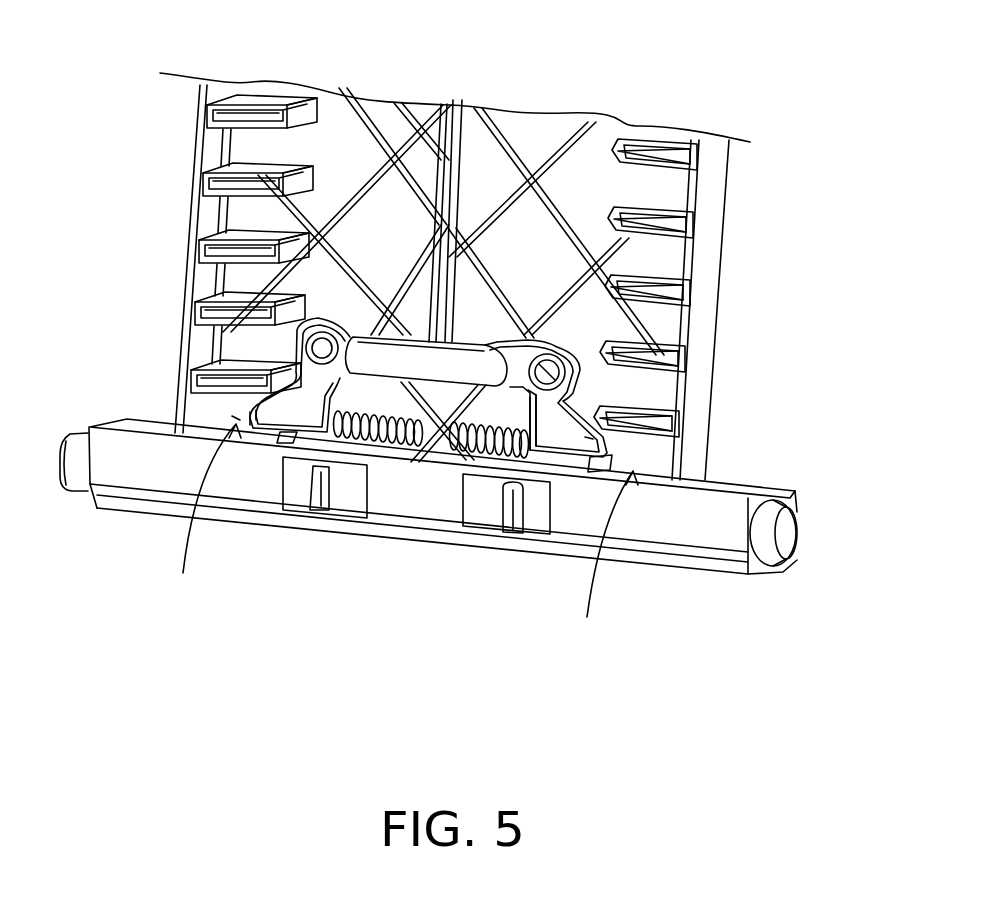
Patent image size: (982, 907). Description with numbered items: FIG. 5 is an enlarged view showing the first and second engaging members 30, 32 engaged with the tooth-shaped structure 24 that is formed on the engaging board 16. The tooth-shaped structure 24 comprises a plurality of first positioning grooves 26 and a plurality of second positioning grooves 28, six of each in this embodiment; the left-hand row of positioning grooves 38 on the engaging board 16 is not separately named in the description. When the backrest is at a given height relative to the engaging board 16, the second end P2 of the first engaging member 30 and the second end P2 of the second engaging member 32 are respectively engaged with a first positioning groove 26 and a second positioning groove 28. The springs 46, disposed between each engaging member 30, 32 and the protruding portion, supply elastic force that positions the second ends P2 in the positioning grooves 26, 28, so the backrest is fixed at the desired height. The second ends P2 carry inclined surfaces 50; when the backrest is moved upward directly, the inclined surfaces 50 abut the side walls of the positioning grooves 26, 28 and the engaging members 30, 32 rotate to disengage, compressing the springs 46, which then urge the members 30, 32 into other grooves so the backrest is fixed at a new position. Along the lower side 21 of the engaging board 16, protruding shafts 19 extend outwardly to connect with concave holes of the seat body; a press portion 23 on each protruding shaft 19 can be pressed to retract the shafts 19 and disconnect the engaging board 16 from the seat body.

The engaging board 16 is at (533, 127).
The left guide ribs 38 is at (445, 152).
The tooth-shaped structure 24 is at (713, 234).
The second engaging member 32 is at (308, 372).
The first engaging member 30 is at (547, 427).
The spring 46 is at (460, 458).
The inclined surface 50 is at (257, 380).
The second end P2 is at (236, 418).
The side of the engaging board 21 is at (787, 497).
The protruding shaft 19 is at (77, 462).
The press portion 23 is at (317, 493).
The second positioning groove 28 is at (201, 518).
The first positioning groove 26 is at (601, 560).